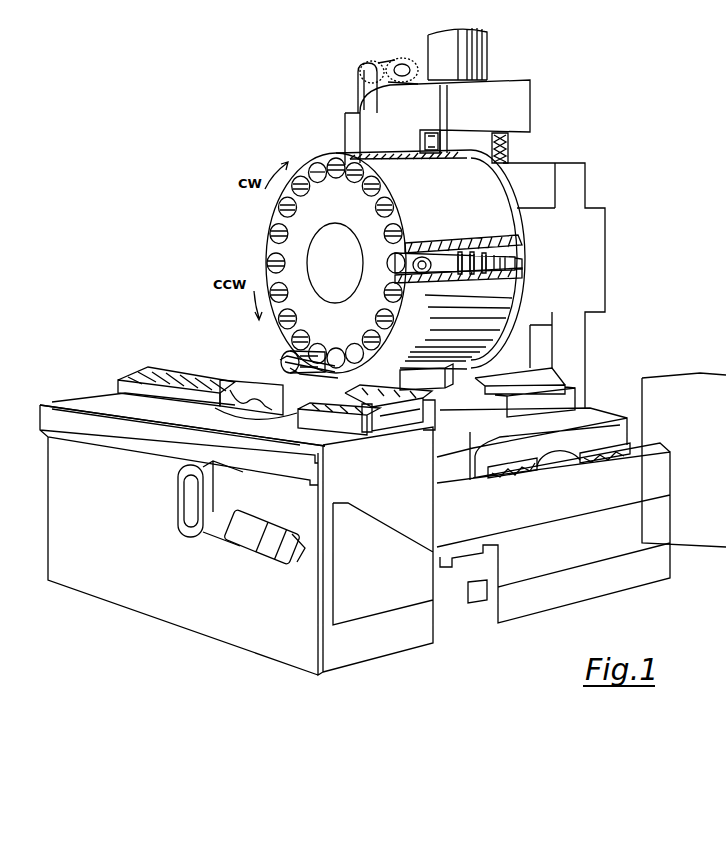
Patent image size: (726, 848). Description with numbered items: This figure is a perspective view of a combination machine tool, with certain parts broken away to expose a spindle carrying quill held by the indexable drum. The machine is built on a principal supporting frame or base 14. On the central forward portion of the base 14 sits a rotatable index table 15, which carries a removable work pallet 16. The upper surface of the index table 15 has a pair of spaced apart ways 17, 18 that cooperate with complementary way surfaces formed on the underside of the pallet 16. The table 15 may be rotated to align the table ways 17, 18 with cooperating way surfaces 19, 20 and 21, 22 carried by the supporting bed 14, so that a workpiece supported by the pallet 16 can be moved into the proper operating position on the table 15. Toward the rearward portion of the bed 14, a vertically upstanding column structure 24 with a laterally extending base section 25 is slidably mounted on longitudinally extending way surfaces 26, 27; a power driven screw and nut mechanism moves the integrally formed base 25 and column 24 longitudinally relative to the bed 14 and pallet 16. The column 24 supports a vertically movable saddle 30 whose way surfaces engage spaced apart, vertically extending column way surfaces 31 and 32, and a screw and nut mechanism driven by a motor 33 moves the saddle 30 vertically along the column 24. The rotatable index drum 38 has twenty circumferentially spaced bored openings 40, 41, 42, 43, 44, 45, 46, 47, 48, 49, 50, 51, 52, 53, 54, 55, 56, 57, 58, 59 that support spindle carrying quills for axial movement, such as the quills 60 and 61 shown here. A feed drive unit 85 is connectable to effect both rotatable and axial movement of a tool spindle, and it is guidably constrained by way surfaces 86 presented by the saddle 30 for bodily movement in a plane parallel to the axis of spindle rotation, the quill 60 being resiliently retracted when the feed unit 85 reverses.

The supporting frame or base 14 is at (355, 661).
The rotatable index table 15 is at (213, 403).
The work pallet 16 is at (282, 361).
The table way 17 is at (248, 399).
The table way 18 is at (281, 404).
The way surface 19 is at (173, 372).
The way surface 20 is at (145, 377).
The way surface 21 is at (400, 418).
The way surface 22 is at (360, 427).
The column structure 24 is at (498, 88).
The base section 25 is at (582, 416).
The way surface 26 is at (534, 462).
The way surface 27 is at (612, 448).
The saddle 30 is at (595, 253).
The column way surface 31 is at (425, 137).
The column way surface 32 is at (498, 133).
The motor 33 is at (455, 17).
The rotatable index drum 38 is at (510, 291).
The bored opening 40 is at (337, 348).
The bored opening 41 is at (355, 345).
The bored opening 42 is at (381, 342).
The bored opening 43 is at (394, 319).
The bored opening 44 is at (386, 296).
The bored opening 45 is at (390, 263).
The bored opening 46 is at (402, 232).
The bored opening 47 is at (384, 217).
The bored opening 48 is at (381, 187).
The bored opening 49 is at (364, 174).
The bored opening 50 is at (338, 157).
The bored opening 51 is at (317, 162).
The bored opening 52 is at (301, 195).
The bored opening 53 is at (279, 205).
The bored opening 54 is at (270, 232).
The bored opening 55 is at (279, 256).
The bored opening 56 is at (288, 291).
The bored opening 57 is at (279, 322).
The bored opening 58 is at (292, 340).
The bored opening 59 is at (318, 345).
The quill 60 is at (288, 355).
The quill 61 is at (445, 254).
The feed drive unit 85 is at (535, 351).
The way surfaces 86 is at (426, 377).